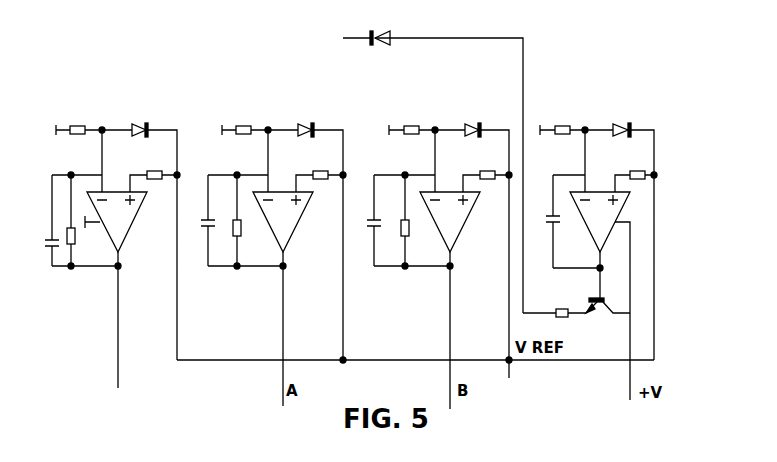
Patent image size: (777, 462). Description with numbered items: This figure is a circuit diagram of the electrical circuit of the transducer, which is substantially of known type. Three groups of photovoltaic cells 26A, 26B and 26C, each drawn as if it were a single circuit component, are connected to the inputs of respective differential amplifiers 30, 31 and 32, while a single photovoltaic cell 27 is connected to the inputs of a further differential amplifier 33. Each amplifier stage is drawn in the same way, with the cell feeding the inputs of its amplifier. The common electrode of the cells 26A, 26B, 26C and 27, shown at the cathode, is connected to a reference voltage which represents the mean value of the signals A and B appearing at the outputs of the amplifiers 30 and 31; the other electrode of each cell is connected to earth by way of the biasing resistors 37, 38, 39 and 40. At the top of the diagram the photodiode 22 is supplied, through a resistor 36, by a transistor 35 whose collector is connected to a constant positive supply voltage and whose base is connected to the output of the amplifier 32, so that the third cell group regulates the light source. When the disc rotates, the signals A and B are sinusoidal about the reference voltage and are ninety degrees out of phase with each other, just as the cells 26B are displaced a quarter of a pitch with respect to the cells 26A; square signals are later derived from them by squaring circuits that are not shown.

The photodiode 22 is at (388, 44).
The biasing resistor 40 is at (78, 126).
The single photovoltaic cell 27 is at (142, 125).
The differential amplifier 33 is at (125, 227).
The biasing resistor 37 is at (244, 126).
The group of photovoltaic cells 26A is at (300, 125).
The differential amplifier 30 is at (290, 227).
The biasing resistor 38 is at (411, 126).
The group of photovoltaic cells 26B is at (467, 125).
The differential amplifier 31 is at (457, 227).
The biasing resistor 39 is at (561, 126).
The group of photovoltaic cells 26C is at (620, 125).
The differential amplifier 32 is at (595, 223).
The transistor 35 is at (590, 300).
The resistor 36 is at (558, 309).